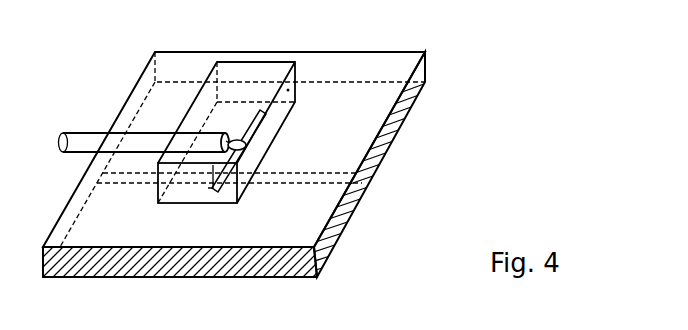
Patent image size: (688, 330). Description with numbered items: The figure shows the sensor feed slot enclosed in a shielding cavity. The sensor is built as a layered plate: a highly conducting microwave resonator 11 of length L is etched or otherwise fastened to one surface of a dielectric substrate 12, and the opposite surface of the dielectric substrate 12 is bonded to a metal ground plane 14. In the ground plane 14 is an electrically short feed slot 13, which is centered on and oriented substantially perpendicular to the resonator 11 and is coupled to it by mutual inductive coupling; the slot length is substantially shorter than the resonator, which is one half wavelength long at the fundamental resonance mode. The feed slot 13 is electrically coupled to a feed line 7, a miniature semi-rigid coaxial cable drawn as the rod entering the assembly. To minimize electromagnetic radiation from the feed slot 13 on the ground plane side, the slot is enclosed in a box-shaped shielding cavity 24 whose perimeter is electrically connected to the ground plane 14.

The feed line 7 is at (193, 142).
The feed slot 13 is at (258, 108).
The shielding cavity 24 is at (288, 90).
The ground plane 14 is at (428, 64).
The microwave resonator 11 is at (373, 176).
The dielectric substrate 12 is at (347, 220).